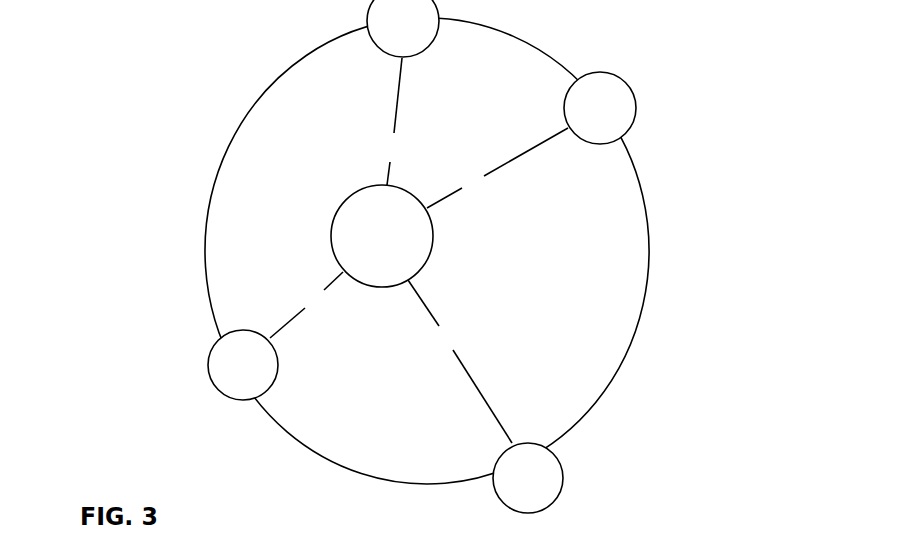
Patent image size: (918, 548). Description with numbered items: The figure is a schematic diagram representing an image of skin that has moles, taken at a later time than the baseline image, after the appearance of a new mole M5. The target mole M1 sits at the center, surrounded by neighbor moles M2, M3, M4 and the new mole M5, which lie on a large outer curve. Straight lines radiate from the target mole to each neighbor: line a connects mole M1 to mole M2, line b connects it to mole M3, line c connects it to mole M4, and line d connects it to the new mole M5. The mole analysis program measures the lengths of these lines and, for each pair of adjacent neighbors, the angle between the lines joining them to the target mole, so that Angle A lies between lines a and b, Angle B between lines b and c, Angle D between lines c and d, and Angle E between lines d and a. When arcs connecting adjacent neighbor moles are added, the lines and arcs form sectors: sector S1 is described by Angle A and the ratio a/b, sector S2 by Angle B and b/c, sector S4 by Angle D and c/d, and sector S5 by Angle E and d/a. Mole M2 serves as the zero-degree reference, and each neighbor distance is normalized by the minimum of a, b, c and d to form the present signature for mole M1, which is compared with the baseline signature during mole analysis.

The mole M1 is at (365, 249).
The mole M2 is at (386, 33).
The mole M3 is at (583, 120).
The mole M4 is at (511, 490).
The new mole M5 is at (226, 377).
The sector S1 is at (520, 39).
The sector S2 is at (643, 257).
The sector S4 is at (278, 415).
The sector S5 is at (247, 103).
The line a is at (394, 121).
The line b is at (497, 168).
The line c is at (460, 361).
The line d is at (306, 305).
The Angle A is at (505, 147).
The Angle B is at (562, 271).
The Angle D is at (401, 376).
The Angle E is at (269, 182).